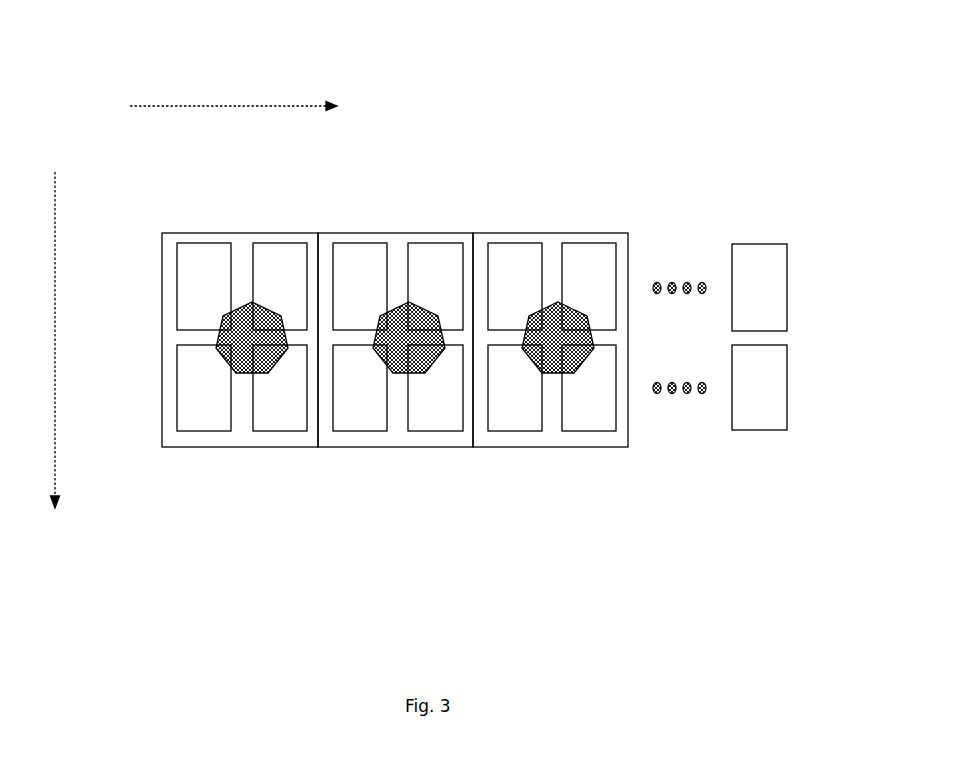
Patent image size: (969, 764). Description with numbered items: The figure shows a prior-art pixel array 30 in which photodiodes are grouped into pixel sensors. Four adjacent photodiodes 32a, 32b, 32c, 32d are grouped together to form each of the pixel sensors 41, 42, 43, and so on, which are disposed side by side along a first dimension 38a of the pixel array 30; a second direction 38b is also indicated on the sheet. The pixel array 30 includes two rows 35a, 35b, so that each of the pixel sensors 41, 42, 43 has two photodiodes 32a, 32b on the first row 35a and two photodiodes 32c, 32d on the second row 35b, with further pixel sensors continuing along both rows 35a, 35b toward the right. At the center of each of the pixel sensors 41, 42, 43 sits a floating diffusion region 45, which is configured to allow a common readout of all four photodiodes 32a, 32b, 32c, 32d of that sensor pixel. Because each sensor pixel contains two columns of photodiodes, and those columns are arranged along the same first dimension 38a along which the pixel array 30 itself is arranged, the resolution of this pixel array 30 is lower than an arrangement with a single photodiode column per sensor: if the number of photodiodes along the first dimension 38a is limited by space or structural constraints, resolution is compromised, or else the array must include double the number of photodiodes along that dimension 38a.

The pixel array 30 is at (440, 110).
The photodiode 32a is at (198, 277).
The photodiode 32b is at (278, 263).
The photodiode 32c is at (195, 408).
The photodiode 32d is at (285, 422).
The first row 35a is at (755, 288).
The second row 35b is at (760, 413).
The first dimension 38a is at (233, 95).
The column direction 38b is at (37, 340).
The pixel sensor 41 is at (242, 448).
The pixel sensor 42 is at (393, 437).
The pixel sensor 43 is at (550, 437).
The floating diffusion region 45 is at (276, 317).